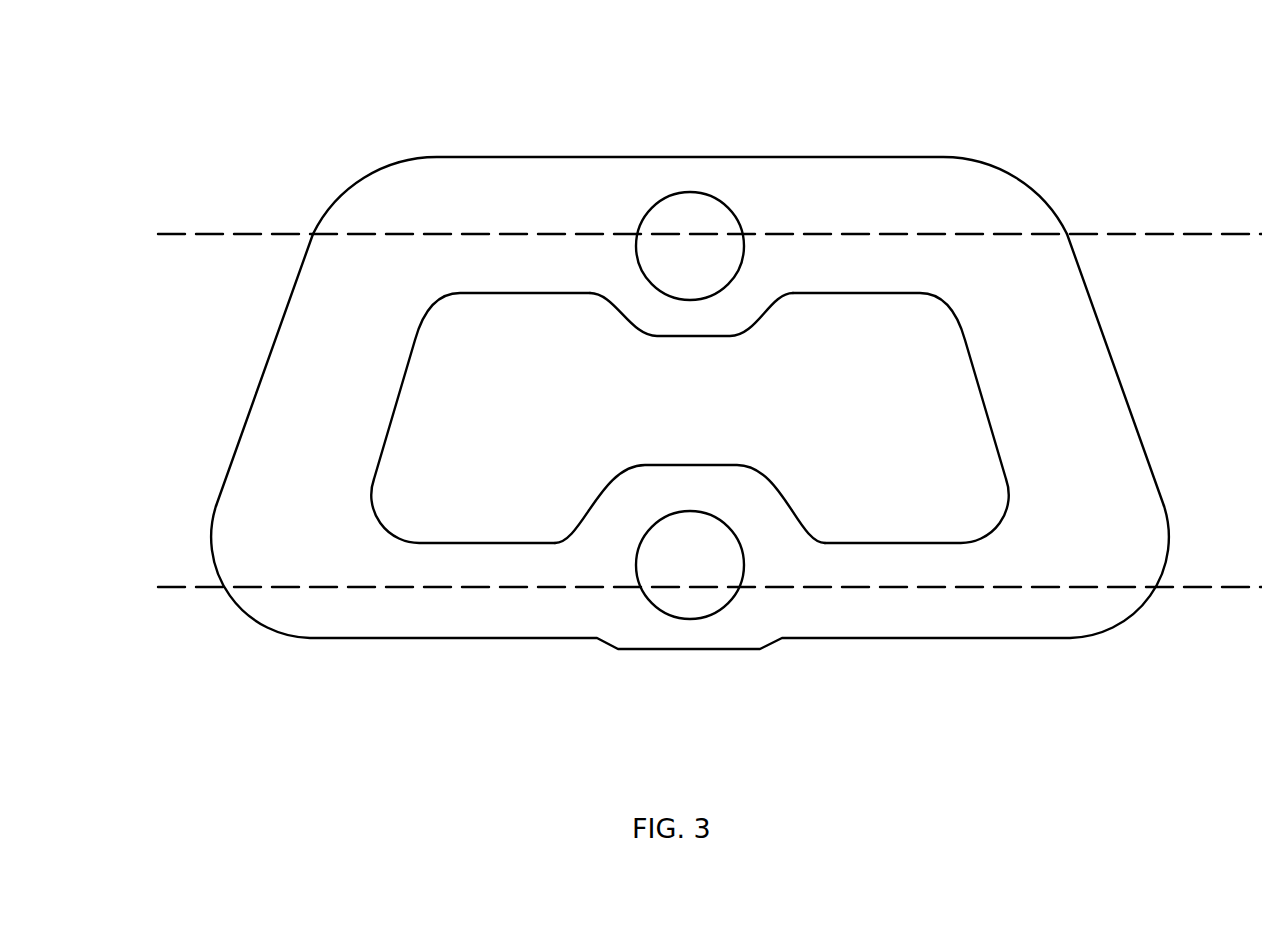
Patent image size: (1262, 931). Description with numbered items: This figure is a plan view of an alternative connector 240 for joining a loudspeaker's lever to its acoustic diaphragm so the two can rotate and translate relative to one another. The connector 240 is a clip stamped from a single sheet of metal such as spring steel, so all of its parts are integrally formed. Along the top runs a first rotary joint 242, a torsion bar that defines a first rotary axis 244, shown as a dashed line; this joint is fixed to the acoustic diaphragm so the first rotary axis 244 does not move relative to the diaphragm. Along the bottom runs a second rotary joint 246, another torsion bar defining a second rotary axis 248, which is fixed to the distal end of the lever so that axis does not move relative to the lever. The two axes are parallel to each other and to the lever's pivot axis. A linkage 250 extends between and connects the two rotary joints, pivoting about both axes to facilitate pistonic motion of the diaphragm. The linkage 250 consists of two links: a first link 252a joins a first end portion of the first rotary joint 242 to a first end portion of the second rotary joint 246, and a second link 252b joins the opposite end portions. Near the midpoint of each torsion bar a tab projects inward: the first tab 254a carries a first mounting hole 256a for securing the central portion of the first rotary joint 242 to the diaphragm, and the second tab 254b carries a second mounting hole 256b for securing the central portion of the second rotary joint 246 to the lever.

The connector 240 is at (199, 86).
The first rotary joint 242 is at (828, 186).
The first rotary axis 244 is at (1148, 233).
The second rotary joint 246 is at (927, 619).
The second rotary axis 248 is at (1212, 588).
The linkage 250 is at (270, 327).
The first link 252a is at (273, 398).
The second link 252b is at (1088, 386).
The first tab 254a is at (632, 330).
The second tab 254b is at (763, 478).
The first mounting hole 256a is at (681, 311).
The second mounting hole 256b is at (685, 500).